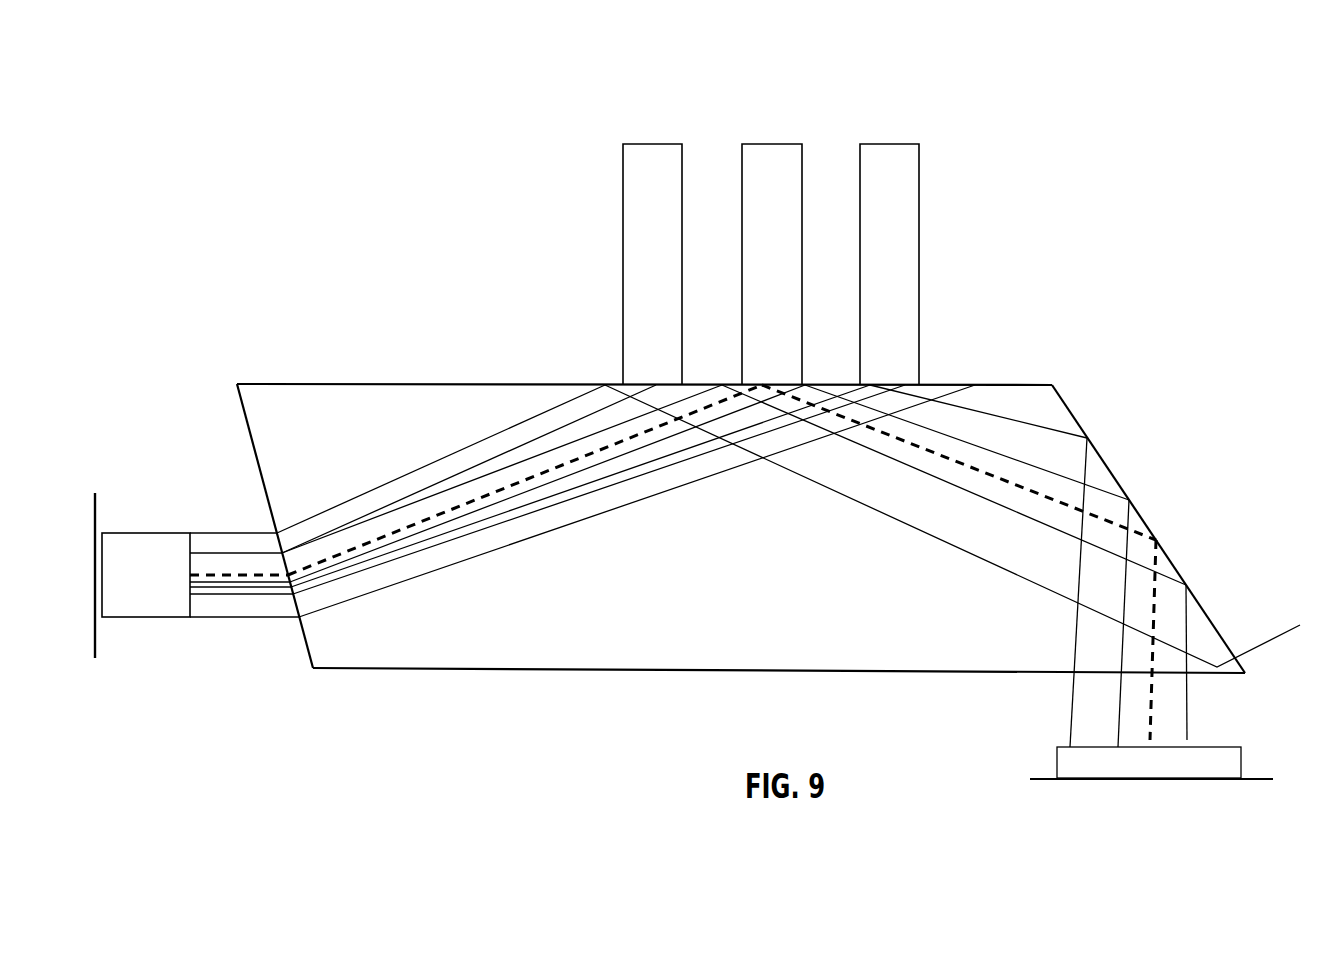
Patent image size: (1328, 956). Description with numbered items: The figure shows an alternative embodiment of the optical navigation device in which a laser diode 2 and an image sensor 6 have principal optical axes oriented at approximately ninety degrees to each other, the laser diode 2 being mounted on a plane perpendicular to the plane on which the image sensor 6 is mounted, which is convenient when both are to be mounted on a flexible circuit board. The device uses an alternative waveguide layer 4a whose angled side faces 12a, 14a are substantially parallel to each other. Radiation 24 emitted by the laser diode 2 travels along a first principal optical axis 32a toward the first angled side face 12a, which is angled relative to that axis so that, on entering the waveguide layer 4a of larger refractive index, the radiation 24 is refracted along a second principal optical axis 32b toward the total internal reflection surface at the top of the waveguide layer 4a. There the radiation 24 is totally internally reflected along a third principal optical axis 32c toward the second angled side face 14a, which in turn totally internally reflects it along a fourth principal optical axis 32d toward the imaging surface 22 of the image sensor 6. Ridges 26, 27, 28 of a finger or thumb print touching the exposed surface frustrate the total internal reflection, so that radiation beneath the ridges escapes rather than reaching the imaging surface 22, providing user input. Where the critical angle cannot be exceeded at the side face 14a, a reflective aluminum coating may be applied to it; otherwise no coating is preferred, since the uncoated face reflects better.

The laser diode 2 is at (156, 533).
The waveguide layer 4a is at (822, 640).
The image sensor 6 is at (1072, 752).
The first angled side face 12a is at (247, 423).
The second angled side face 14a is at (1115, 480).
The imaging surface 22 is at (1128, 747).
The radiation 24 is at (440, 552).
The ridge 26 is at (640, 254).
The ridge 27 is at (786, 190).
The ridge 28 is at (892, 232).
The first principal optical axis 32a is at (252, 578).
The second principal optical axis 32b is at (513, 487).
The third principal optical axis 32c is at (977, 470).
The fourth principal optical axis 32d is at (1150, 597).